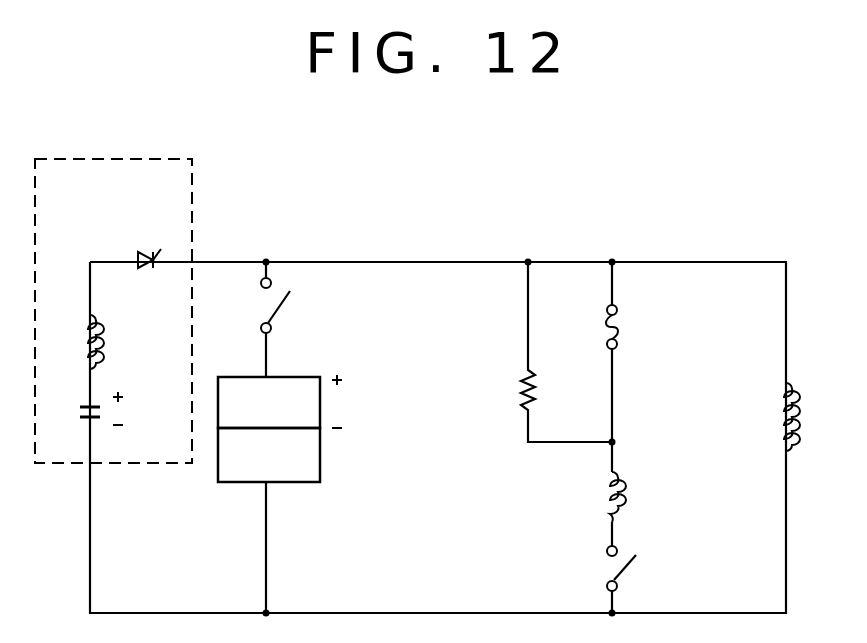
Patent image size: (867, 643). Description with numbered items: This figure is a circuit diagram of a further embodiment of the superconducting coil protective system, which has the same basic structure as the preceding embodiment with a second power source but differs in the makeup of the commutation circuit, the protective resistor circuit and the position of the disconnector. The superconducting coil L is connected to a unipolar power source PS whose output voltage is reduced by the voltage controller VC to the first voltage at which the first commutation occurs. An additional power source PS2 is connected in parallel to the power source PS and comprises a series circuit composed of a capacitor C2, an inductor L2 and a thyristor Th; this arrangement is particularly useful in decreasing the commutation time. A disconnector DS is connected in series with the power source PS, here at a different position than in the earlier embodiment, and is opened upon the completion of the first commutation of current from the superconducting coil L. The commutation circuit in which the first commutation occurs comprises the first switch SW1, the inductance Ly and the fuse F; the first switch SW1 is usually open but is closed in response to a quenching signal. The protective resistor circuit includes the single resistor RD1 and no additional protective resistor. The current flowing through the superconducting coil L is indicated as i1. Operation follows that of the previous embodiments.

The additional power source PS2 is at (113, 298).
The thyristor Th is at (147, 240).
The inductor L2 is at (73, 342).
The capacitor C2 is at (80, 408).
The disconnector DS is at (292, 319).
The power source PS is at (280, 401).
The voltage controller VC is at (280, 520).
The first protective resistor RD1 is at (541, 352).
The fuse F is at (624, 367).
The inductance Ly is at (631, 497).
The first switch SW1 is at (647, 567).
The superconducting coil L is at (772, 417).
The current i1 is at (784, 240).